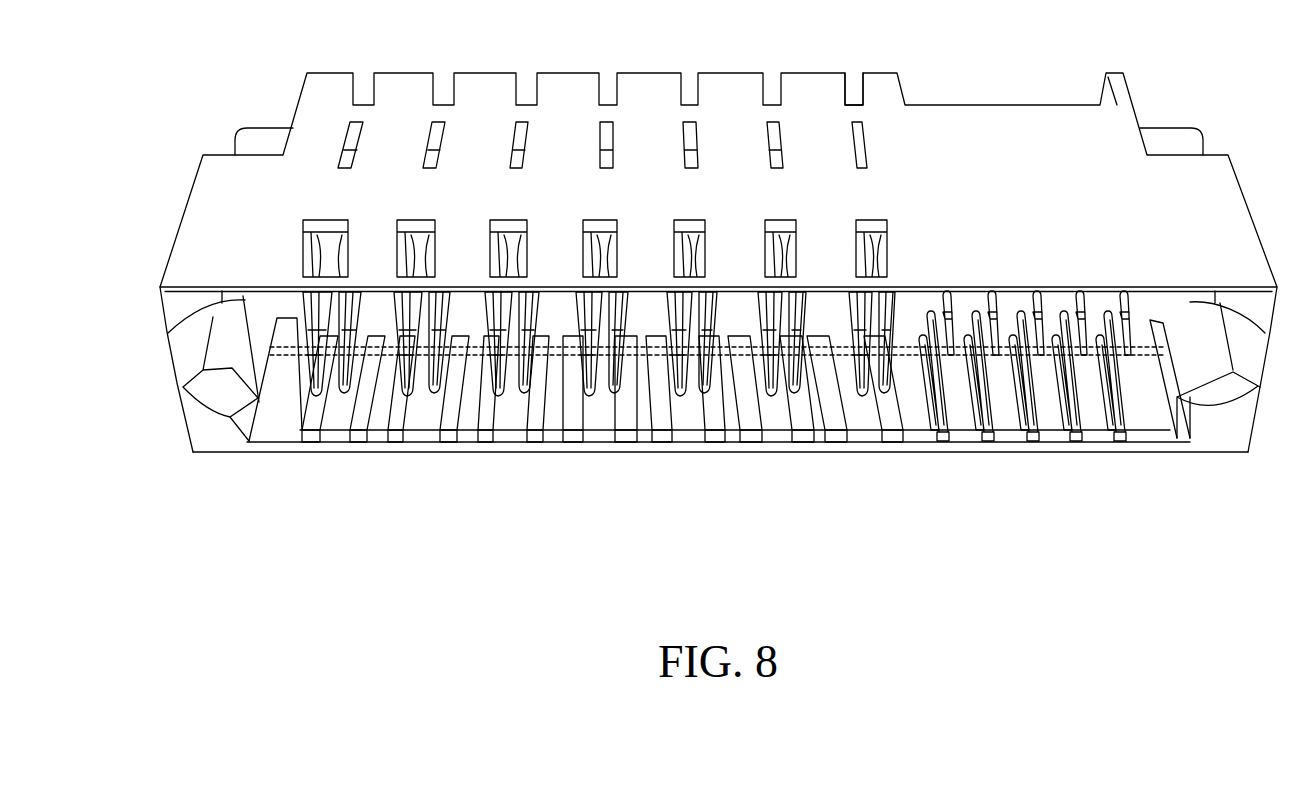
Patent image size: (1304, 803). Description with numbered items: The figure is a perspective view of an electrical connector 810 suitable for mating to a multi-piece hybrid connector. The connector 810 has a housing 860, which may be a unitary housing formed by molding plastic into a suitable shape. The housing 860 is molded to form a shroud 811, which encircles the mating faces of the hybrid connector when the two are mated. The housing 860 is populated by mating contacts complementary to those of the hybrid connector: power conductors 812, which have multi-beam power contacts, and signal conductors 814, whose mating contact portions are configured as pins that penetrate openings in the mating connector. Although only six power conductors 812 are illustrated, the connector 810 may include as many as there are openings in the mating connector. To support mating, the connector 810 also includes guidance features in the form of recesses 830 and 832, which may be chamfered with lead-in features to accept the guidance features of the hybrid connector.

The connector 810 is at (1047, 107).
The shroud 811 is at (740, 430).
The power conductors 812 is at (340, 410).
The signal conductors 814 is at (968, 410).
The recess 830 is at (233, 372).
The recess 832 is at (1203, 375).
The housing 860 is at (880, 82).